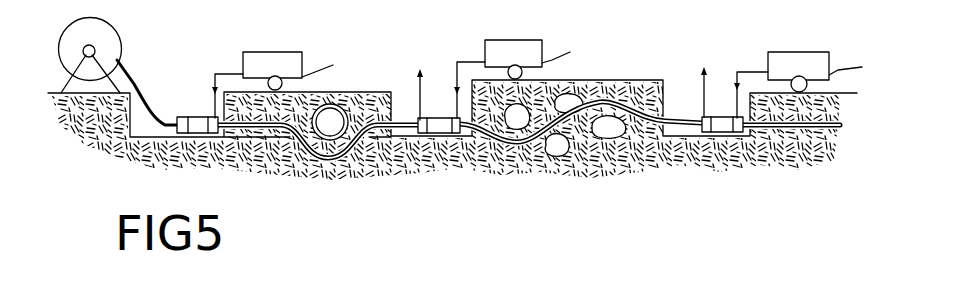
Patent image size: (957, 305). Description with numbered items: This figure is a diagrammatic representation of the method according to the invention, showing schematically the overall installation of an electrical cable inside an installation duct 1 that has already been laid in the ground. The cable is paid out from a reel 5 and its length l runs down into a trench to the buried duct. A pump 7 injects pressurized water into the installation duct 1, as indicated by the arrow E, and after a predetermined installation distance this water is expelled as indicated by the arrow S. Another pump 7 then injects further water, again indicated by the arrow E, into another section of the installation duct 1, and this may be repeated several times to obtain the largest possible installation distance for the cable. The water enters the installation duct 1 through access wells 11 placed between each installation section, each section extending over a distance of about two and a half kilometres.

The cable reel 5 is at (123, 25).
The cable being laid l is at (133, 81).
The installation duct 1 is at (315, 163).
The access well 11 is at (435, 140).
The pump 7 is at (278, 42).
The arrow E is at (490, 70).
The arrow S is at (560, 80).